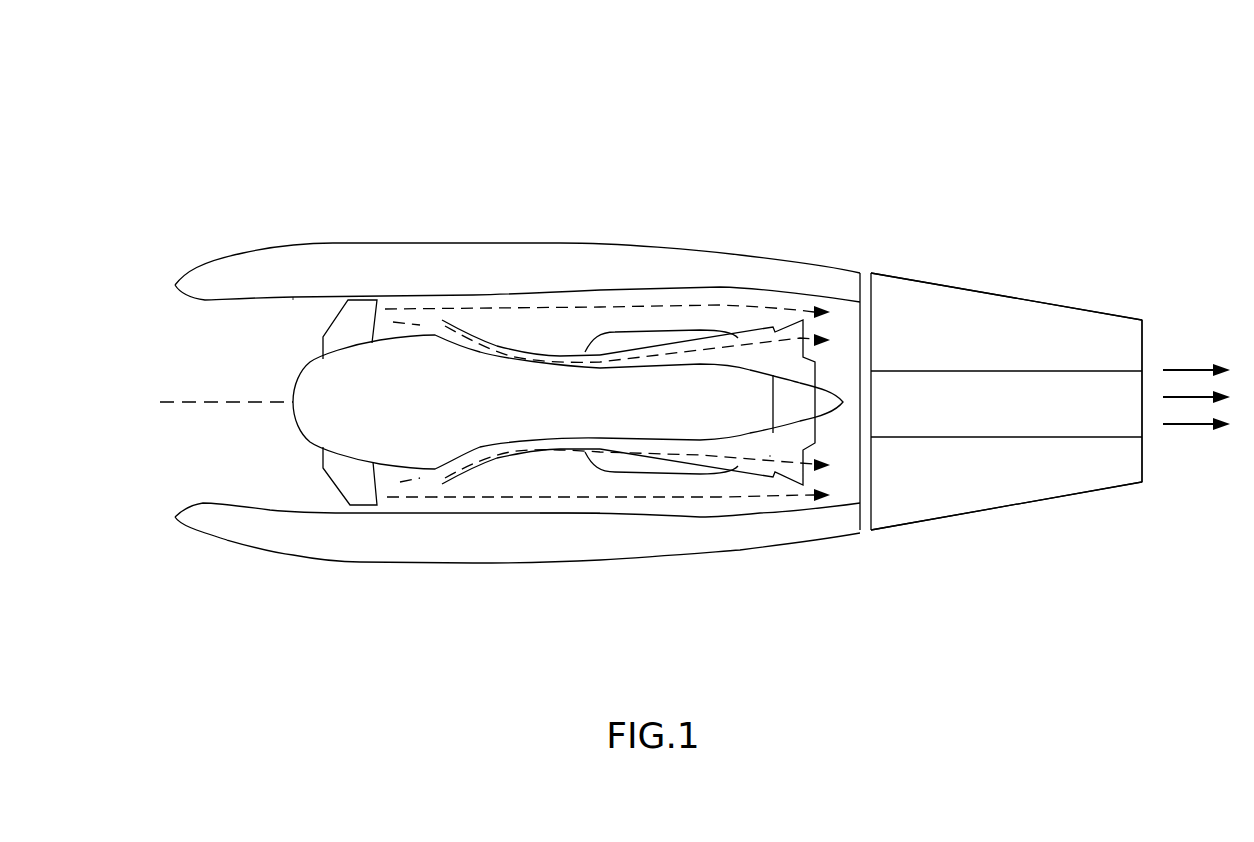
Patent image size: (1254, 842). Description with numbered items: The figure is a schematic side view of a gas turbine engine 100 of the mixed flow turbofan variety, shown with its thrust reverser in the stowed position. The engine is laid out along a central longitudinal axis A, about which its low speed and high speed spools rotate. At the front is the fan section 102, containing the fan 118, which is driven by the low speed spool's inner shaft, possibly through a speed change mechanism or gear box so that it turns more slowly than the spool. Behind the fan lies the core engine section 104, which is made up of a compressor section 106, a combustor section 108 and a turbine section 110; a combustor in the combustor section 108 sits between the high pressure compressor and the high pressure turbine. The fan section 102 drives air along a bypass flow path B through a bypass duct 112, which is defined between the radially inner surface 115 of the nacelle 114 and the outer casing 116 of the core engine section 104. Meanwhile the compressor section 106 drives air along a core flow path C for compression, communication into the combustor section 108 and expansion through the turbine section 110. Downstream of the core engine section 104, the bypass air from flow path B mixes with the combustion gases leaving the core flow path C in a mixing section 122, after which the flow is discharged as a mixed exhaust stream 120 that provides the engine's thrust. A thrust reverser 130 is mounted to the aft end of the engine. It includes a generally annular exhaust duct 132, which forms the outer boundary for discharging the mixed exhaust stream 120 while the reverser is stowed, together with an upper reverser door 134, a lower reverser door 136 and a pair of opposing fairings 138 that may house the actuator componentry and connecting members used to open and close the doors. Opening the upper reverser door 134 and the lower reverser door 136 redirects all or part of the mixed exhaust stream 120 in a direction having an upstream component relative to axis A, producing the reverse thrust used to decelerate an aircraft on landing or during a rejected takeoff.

The gas turbine engine 100 is at (188, 178).
The fan section 102 is at (283, 328).
The core engine section 104 is at (472, 390).
The compressor section 106 is at (503, 328).
The combustor section 108 is at (629, 330).
The turbine section 110 is at (741, 308).
The bypass duct 112 is at (503, 502).
The nacelle 114 is at (312, 542).
The radially inner surface 115 is at (567, 515).
The outer casing 116 is at (623, 473).
The fan 118 is at (333, 485).
The mixed exhaust stream 120 is at (1190, 368).
The mixing section 122 is at (839, 326).
The thrust reverser 130 is at (987, 222).
The exhaust duct 132 is at (1143, 463).
The upper reverser door 134 is at (1017, 298).
The lower reverser door 136 is at (963, 517).
The fairings 138 is at (917, 398).
The central longitudinal axis A is at (185, 403).
The bypass flow path B is at (437, 498).
The core flow path C is at (770, 457).